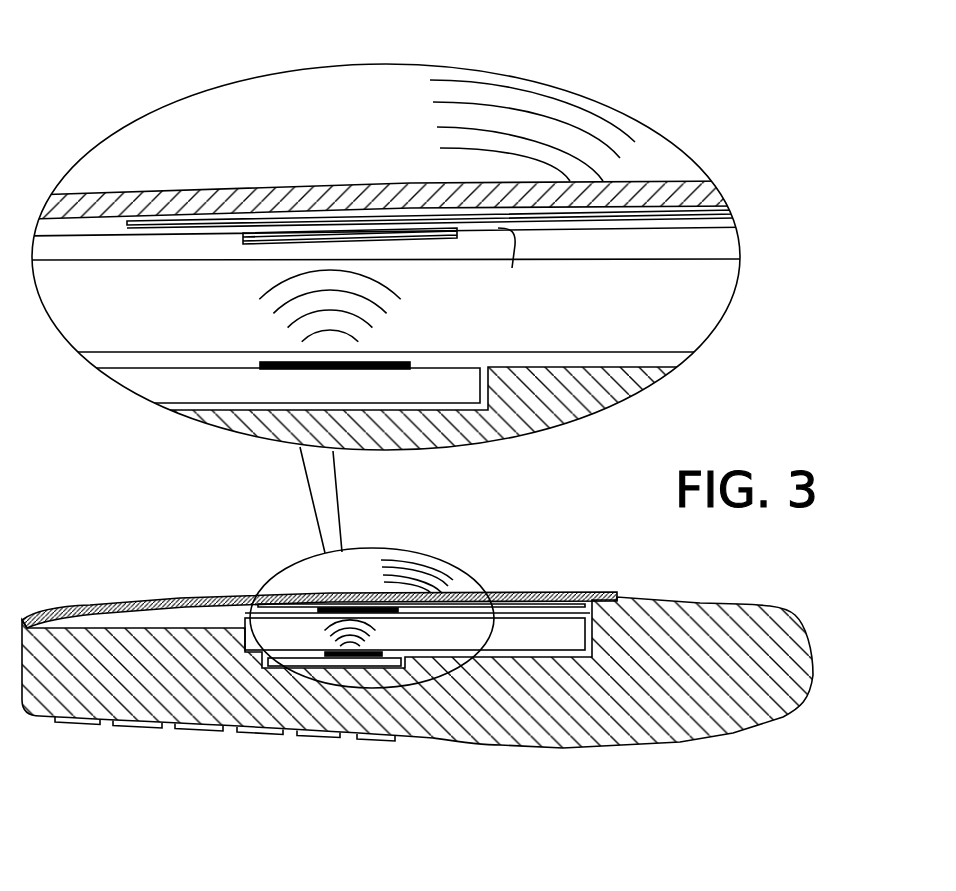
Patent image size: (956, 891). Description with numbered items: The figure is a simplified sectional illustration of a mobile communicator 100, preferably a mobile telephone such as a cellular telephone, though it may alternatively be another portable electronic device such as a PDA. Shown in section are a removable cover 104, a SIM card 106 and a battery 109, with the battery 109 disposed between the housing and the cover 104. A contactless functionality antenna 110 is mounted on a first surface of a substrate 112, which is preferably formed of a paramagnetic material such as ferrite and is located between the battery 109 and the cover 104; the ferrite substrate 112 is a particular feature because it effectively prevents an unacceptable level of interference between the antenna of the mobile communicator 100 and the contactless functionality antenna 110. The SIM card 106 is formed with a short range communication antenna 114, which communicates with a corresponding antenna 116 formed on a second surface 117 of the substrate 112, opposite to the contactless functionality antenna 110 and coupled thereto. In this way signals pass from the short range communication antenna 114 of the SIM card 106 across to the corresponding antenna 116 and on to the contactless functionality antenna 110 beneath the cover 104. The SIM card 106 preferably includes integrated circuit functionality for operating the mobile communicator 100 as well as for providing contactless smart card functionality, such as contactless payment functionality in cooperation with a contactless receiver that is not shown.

The mobile communicator 100 is at (757, 577).
The removable cover 104 is at (344, 190).
The SIM card 106 is at (440, 380).
The battery 109 is at (697, 293).
The contactless functionality antenna 110 is at (283, 210).
The substrate 112 is at (663, 223).
The short range communication antenna 114 is at (262, 363).
The corresponding antenna 116 is at (243, 243).
The second surface 117 is at (512, 268).